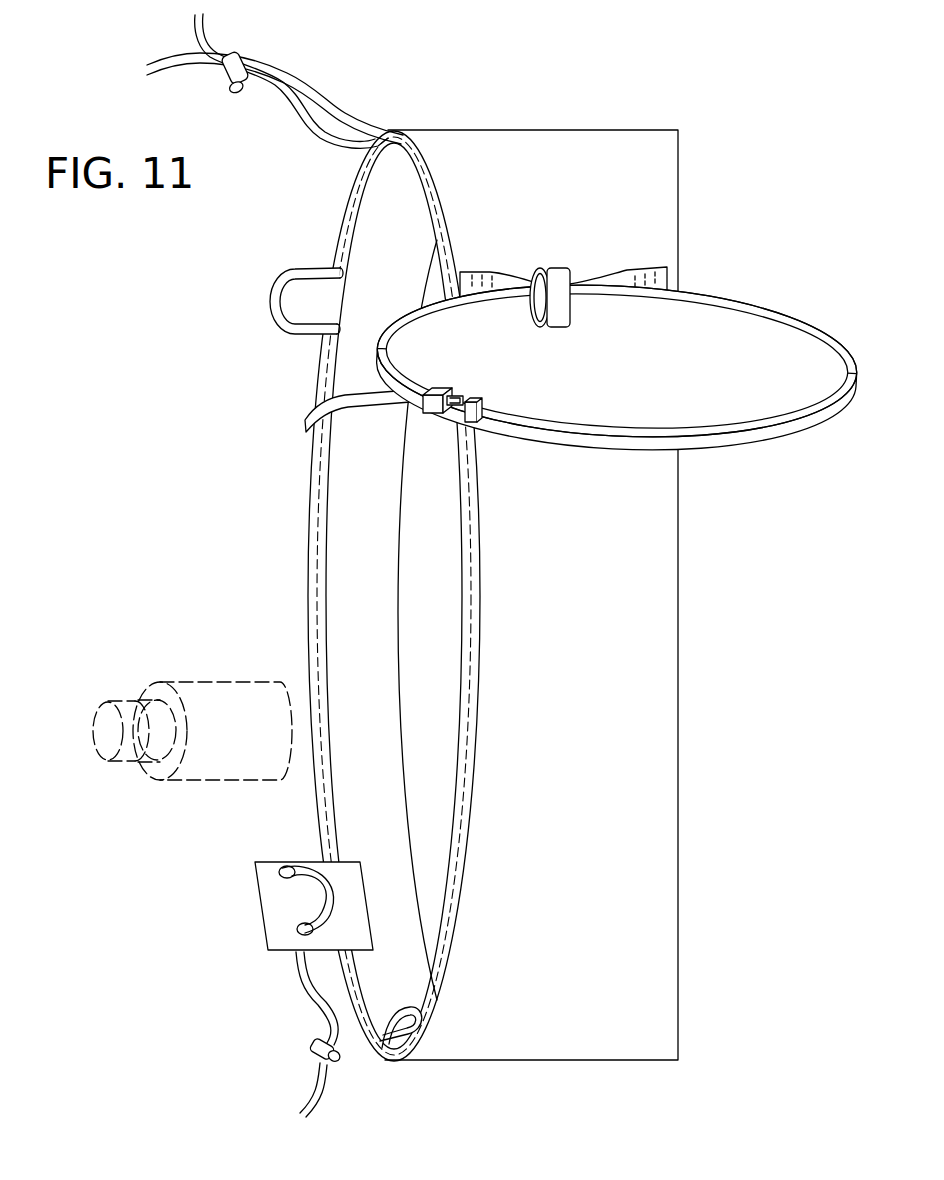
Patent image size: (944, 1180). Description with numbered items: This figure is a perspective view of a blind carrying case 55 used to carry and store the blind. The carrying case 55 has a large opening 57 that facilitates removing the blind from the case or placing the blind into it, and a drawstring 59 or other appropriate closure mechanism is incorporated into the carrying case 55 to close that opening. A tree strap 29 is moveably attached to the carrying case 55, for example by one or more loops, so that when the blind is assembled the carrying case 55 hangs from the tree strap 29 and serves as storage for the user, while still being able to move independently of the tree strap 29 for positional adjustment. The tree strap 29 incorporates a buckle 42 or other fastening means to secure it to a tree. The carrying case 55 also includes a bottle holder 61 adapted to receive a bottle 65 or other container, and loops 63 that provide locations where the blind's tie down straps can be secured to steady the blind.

The tree strap 29 is at (747, 316).
The buckle 42 is at (464, 420).
The blind carrying case 55 is at (222, 482).
The large opening 57 is at (322, 537).
The drawstring 59 is at (284, 77).
The bottle holder 61 is at (313, 893).
The loops 63 is at (296, 271).
The bottle 65 is at (212, 702).